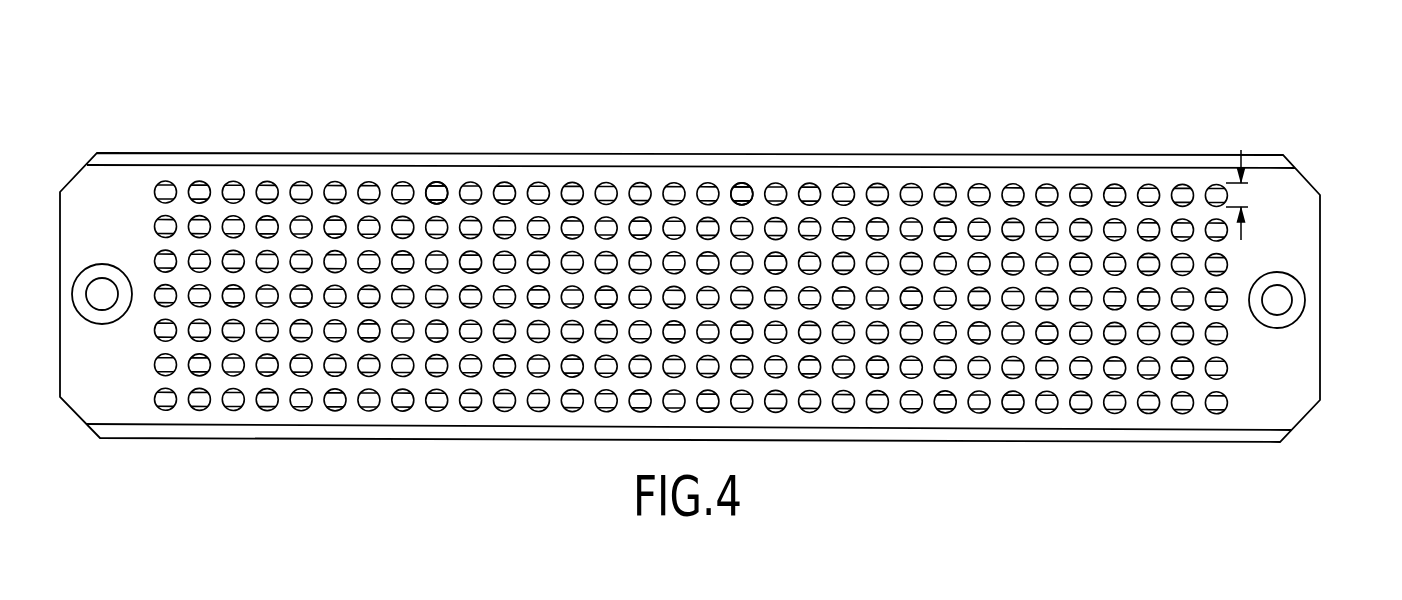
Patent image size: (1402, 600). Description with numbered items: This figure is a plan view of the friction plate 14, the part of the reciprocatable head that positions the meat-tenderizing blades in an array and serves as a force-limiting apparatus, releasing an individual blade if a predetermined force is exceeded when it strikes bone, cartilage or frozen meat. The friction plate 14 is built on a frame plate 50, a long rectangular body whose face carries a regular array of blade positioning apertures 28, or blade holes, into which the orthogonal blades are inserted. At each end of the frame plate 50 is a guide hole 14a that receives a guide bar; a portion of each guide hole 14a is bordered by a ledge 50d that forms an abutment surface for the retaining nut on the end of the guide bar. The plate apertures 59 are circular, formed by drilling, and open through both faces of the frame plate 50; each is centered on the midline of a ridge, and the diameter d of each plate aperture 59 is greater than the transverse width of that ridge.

The friction plate 14 is at (717, 238).
The guide hole 14a is at (1263, 303).
The blade positioning aperture 28 is at (434, 179).
The frame plate 50 is at (553, 180).
The ledge 50d is at (1295, 312).
The plate aperture 59 is at (748, 192).
The diameter of aperture d is at (1243, 197).